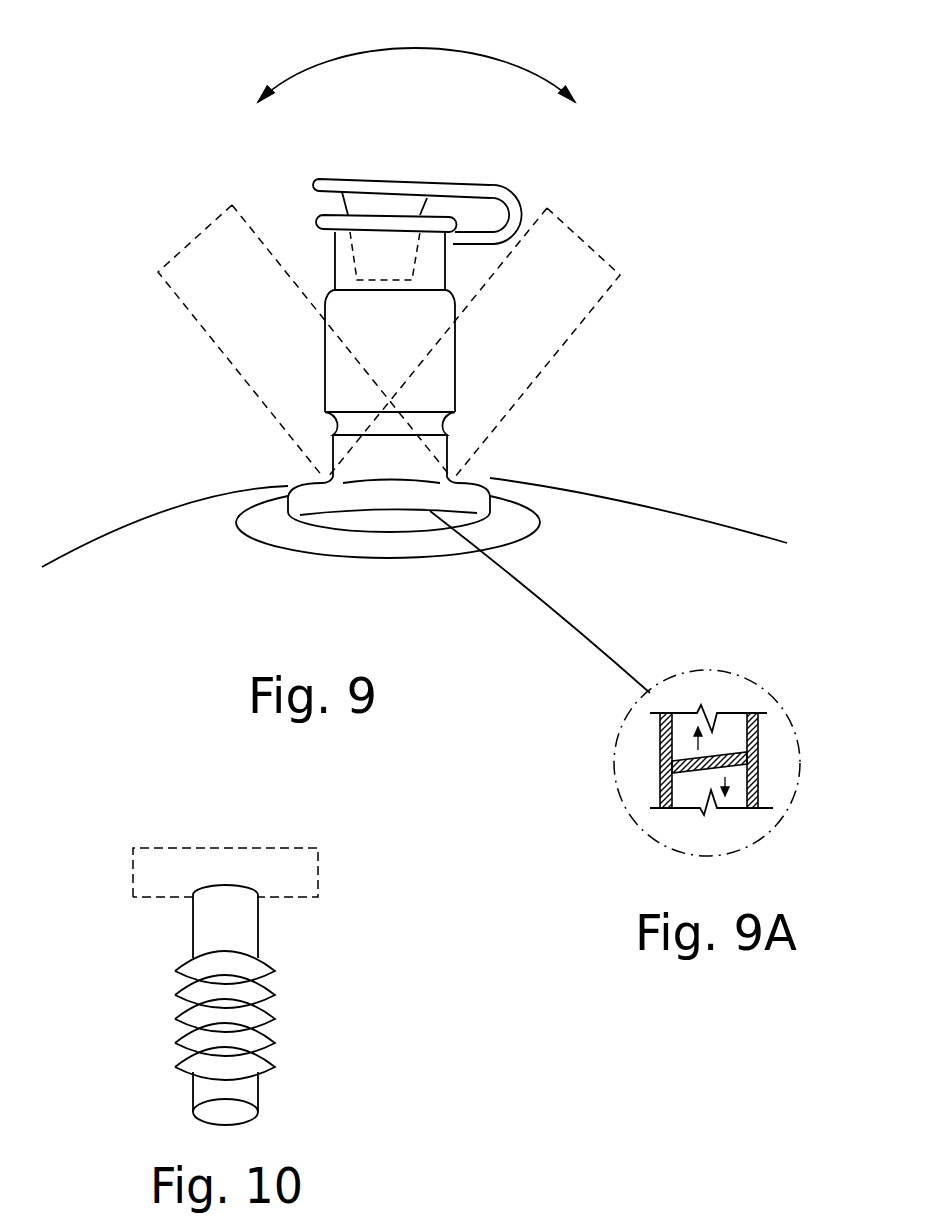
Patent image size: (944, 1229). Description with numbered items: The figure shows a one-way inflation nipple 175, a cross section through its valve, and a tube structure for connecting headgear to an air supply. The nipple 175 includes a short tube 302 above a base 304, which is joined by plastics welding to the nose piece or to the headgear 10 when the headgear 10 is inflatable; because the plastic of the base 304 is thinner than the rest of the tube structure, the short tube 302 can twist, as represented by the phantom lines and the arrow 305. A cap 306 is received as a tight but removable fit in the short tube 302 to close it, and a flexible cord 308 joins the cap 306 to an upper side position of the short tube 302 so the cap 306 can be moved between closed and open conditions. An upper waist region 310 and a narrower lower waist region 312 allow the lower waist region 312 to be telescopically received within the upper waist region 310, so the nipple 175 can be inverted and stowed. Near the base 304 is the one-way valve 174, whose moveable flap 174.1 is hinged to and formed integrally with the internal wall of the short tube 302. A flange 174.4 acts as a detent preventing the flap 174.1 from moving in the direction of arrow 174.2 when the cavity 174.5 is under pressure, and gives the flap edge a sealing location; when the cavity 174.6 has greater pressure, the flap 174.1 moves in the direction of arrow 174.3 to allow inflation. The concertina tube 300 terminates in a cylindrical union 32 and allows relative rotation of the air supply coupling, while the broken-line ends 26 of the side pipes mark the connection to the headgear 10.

In FIG. 9, the headgear 10 is at (172, 508).
In FIG. 10, the ends of the side pipes 26 is at (147, 872).
In FIG. 10, the cylindrical union 32 is at (258, 1103).
In FIG. 9, the one-way valve 174 is at (297, 200).
In FIG. 9A, the one-way valve 174 is at (760, 770).
In FIG. 9A, the moveable flap 174.1 is at (722, 752).
In FIG. 9A, the arrow 174.2 is at (693, 742).
In FIG. 9A, the arrow 174.3 is at (727, 778).
In FIG. 9A, the flange 174.4 is at (677, 762).
In FIG. 9A, the cavity 174.5 is at (683, 787).
In FIG. 9A, the cavity 174.6 is at (740, 740).
In FIG. 9, the inflation nipple 175 is at (660, 198).
In FIG. 10, the concertina tube 300 is at (300, 1027).
In FIG. 9, the short tube 302 is at (456, 352).
In FIG. 9, the base 304 is at (530, 522).
In FIG. 9, the arrow 305 is at (313, 68).
In FIG. 9, the cap 306 is at (370, 203).
In FIG. 9, the flexible cord 308 is at (505, 182).
In FIG. 9, the upper waist region 310 is at (325, 335).
In FIG. 9, the lower waist region 312 is at (333, 468).